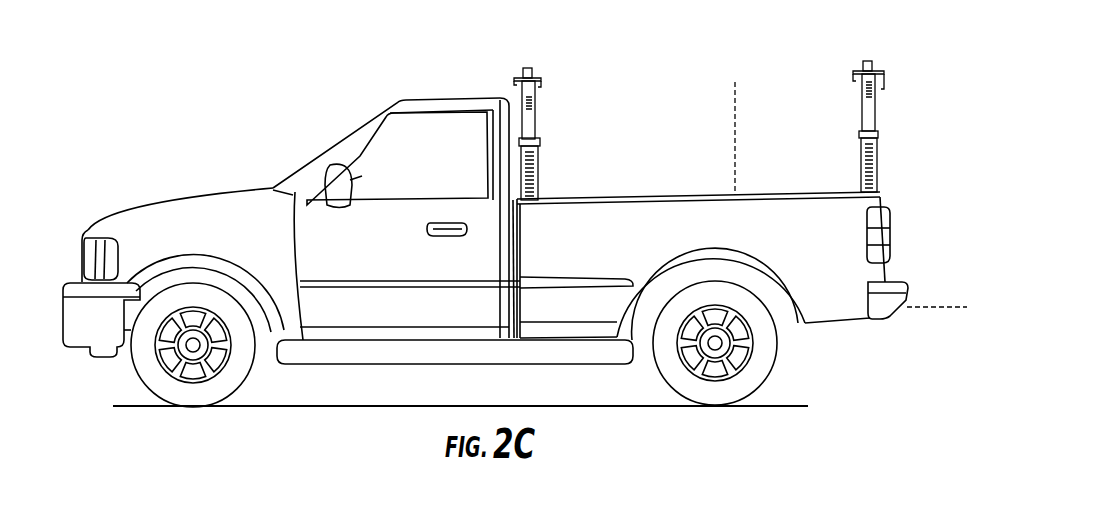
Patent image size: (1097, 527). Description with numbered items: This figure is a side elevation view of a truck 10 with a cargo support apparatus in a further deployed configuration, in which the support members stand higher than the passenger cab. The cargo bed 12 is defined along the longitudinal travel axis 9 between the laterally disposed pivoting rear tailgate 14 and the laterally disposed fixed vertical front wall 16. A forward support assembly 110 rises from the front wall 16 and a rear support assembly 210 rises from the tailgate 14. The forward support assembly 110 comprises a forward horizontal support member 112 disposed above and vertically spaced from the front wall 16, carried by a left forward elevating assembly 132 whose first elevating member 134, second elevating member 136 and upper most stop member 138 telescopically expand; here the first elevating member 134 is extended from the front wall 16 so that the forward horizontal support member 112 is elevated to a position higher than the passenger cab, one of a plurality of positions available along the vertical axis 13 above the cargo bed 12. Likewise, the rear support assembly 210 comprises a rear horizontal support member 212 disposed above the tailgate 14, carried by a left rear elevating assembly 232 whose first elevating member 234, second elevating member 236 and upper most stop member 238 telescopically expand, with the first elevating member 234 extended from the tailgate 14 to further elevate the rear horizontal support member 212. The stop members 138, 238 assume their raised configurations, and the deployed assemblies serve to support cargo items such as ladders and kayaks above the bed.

The longitudinal travel axis 9 is at (950, 306).
The truck 10 is at (200, 177).
The cargo bed 12 is at (700, 192).
The vertical axis 13 is at (733, 123).
The rear tailgate 14 is at (893, 237).
The front wall 16 is at (508, 265).
The forward support assembly 110 is at (613, 67).
The forward horizontal support member 112 is at (516, 79).
The left forward elevating assembly 132 is at (540, 133).
The first elevating member 134 is at (538, 171).
The second elevating member 136 is at (536, 101).
The upper most stop member 138 is at (529, 70).
The rear support assembly 210 is at (773, 82).
The rear horizontal support member 212 is at (884, 77).
The left rear elevating assembly 232 is at (859, 125).
The first elevating member 234 is at (861, 157).
The second elevating member 236 is at (861, 100).
The upper most stop member 238 is at (864, 62).